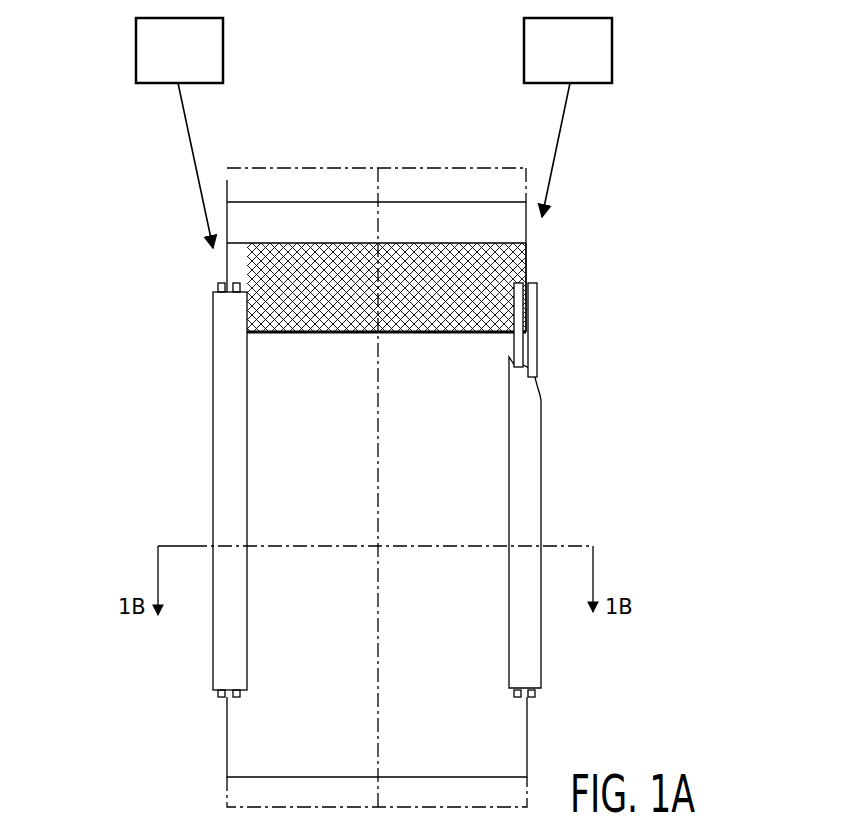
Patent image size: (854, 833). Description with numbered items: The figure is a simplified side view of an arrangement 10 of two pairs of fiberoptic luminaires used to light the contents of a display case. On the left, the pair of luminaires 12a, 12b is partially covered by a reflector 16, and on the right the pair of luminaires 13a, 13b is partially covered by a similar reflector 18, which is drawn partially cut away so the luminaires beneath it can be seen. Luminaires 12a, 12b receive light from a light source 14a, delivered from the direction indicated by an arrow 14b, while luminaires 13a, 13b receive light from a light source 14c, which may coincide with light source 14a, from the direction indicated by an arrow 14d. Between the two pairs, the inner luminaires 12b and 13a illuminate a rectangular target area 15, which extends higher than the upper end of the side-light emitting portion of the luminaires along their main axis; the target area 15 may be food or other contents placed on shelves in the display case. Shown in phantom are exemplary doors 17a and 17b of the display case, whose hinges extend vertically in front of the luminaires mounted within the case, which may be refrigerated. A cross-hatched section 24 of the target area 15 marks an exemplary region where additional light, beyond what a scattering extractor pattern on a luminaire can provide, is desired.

The arrangement 10 is at (163, 192).
The luminaire 12a is at (218, 283).
The luminaire 12b is at (236, 283).
The luminaire 13a is at (517, 347).
The luminaire 13b is at (533, 352).
The light source 14a is at (136, 45).
The arrow 14b is at (187, 137).
The light source 14c is at (612, 48).
The arrow 14d is at (558, 140).
The target area 15 is at (530, 237).
The reflector 16 is at (220, 355).
The door 17a is at (297, 165).
The door 17b is at (474, 166).
The reflector 18 is at (532, 453).
The section 24 is at (312, 333).